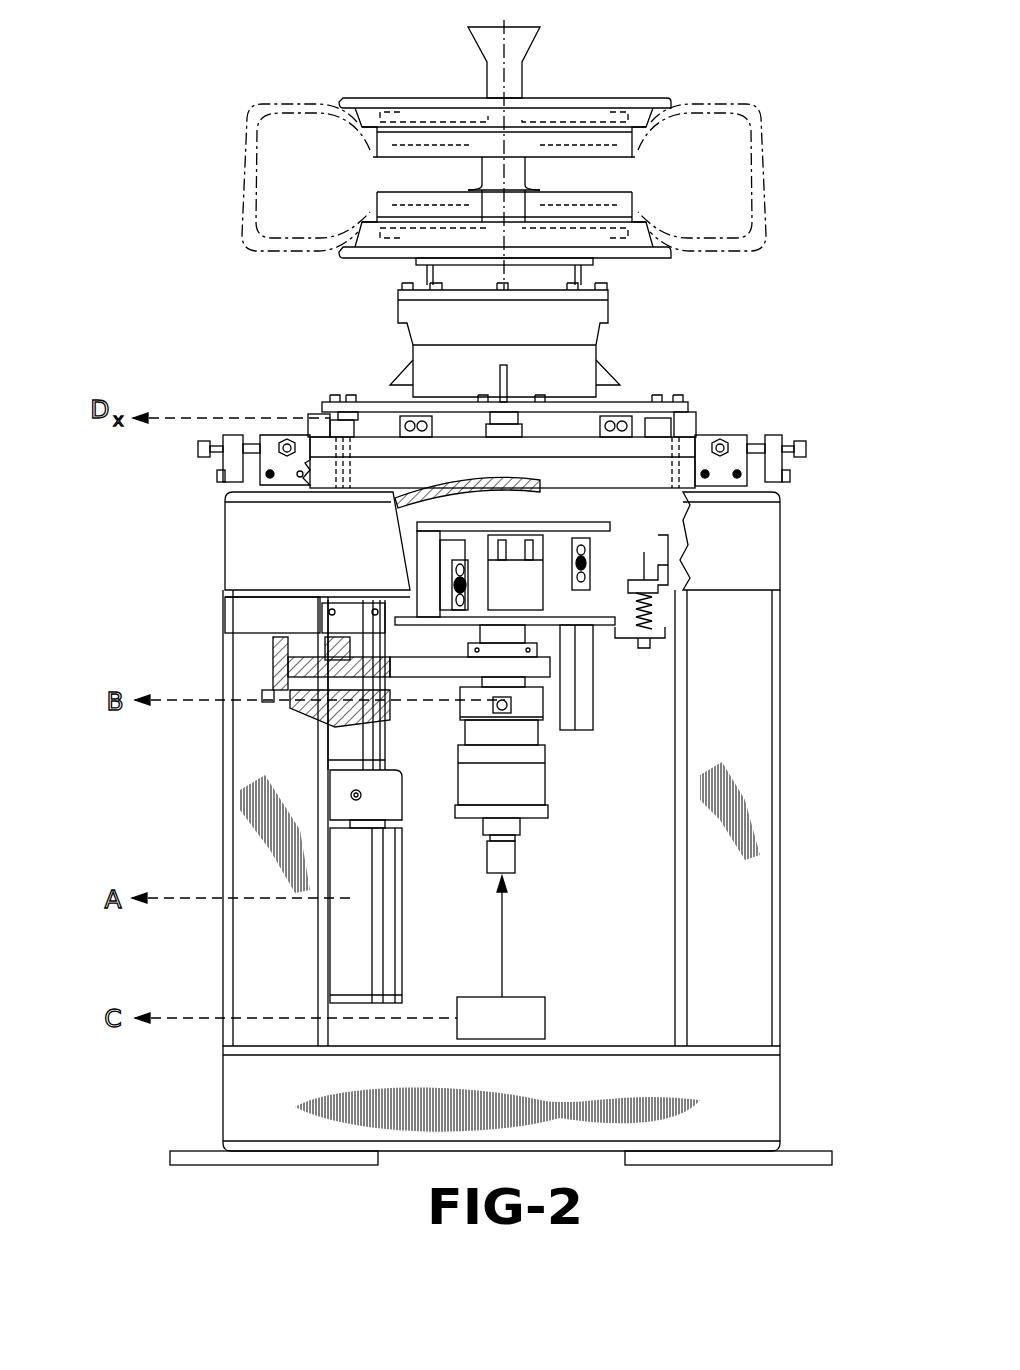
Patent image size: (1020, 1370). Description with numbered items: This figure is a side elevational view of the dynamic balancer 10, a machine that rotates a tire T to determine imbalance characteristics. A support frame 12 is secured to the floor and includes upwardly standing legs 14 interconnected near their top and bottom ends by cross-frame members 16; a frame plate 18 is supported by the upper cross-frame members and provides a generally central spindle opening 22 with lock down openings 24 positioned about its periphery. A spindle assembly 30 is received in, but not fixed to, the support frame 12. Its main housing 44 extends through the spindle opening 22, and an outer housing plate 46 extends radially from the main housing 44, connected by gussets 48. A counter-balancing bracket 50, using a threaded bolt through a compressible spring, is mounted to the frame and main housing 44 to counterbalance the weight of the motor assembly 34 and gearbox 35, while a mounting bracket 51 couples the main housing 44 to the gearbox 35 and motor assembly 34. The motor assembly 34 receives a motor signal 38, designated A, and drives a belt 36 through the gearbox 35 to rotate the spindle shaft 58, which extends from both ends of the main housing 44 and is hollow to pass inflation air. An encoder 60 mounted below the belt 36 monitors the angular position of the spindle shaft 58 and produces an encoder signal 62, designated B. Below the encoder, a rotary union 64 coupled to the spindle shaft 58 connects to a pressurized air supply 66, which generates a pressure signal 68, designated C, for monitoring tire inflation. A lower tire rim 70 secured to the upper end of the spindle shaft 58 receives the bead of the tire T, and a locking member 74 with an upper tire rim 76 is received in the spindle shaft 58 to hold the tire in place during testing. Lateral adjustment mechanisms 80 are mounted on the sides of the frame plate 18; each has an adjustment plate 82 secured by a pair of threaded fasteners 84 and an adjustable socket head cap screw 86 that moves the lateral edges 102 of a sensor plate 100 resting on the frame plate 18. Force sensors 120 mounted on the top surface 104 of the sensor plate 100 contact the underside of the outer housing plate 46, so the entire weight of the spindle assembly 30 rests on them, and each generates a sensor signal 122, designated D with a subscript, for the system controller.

The dynamic balancer 10 is at (152, 125).
The support frame 12 is at (205, 845).
The legs 14 is at (272, 993).
The cross-frame members 16 is at (760, 560).
The frame plate 18 is at (330, 497).
The spindle opening 22 is at (378, 494).
The lock down openings 24 is at (300, 495).
The spindle assembly 30 is at (592, 650).
The motor assembly 34 is at (345, 942).
The gearbox 35 is at (340, 705).
The belt 36 is at (455, 665).
The motor signal 38 is at (180, 904).
The main housing 44 is at (396, 305).
The outer housing plate 46 is at (650, 408).
The gussets 48 is at (607, 387).
The counter-balancing bracket 50 is at (667, 606).
The mounting bracket 51 is at (373, 658).
The spindle shaft 58 is at (530, 677).
The encoder 60 is at (530, 700).
The encoder signal 62 is at (193, 702).
The rotary union 64 is at (515, 768).
The pressurized air supply 66 is at (528, 996).
The pressure signal 68 is at (200, 1018).
The lower tire rim 70 is at (658, 252).
The locking member 74 is at (522, 36).
The upper tire rim 76 is at (690, 100).
The lateral adjustment mechanisms 80 is at (254, 424).
The adjustment plate 82 is at (243, 434).
The threaded fasteners 84 is at (217, 478).
The socket head cap screw 86 is at (198, 445).
The sensor plate 100 is at (382, 438).
The lateral edges 102 is at (530, 450).
The top surface 104 is at (467, 403).
The force sensors 120 is at (522, 403).
The sensor signal 122 is at (178, 417).
The tire T is at (770, 168).